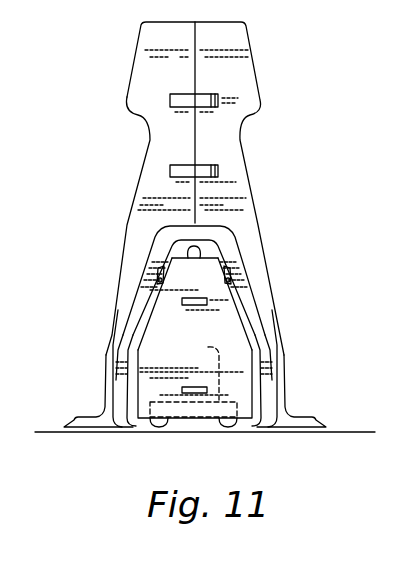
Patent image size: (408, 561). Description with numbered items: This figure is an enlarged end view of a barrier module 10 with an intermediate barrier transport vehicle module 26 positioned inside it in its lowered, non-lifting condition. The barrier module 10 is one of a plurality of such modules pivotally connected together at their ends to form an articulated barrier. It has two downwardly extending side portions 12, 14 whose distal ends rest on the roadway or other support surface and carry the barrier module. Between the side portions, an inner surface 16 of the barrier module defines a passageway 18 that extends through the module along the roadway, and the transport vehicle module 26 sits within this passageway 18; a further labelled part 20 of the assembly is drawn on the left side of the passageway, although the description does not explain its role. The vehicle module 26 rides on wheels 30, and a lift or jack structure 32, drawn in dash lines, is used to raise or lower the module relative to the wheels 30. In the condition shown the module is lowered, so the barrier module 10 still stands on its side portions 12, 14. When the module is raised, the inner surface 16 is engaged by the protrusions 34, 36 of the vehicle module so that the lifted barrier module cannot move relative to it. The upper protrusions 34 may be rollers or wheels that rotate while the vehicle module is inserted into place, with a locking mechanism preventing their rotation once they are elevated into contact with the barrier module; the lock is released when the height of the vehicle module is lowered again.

The barrier module 10 is at (248, 142).
The side portion 12 is at (105, 372).
The side portion 14 is at (290, 403).
The inner surface 16 is at (150, 254).
The passageway 18 is at (260, 333).
The left inner support 20 is at (138, 314).
The intermediate barrier transport vehicle module 26 is at (150, 392).
The wheels 30 is at (160, 429).
The lift or jack structure 32 is at (193, 376).
The upper protrusions 34 is at (200, 255).
The protrusions 36 is at (120, 271).